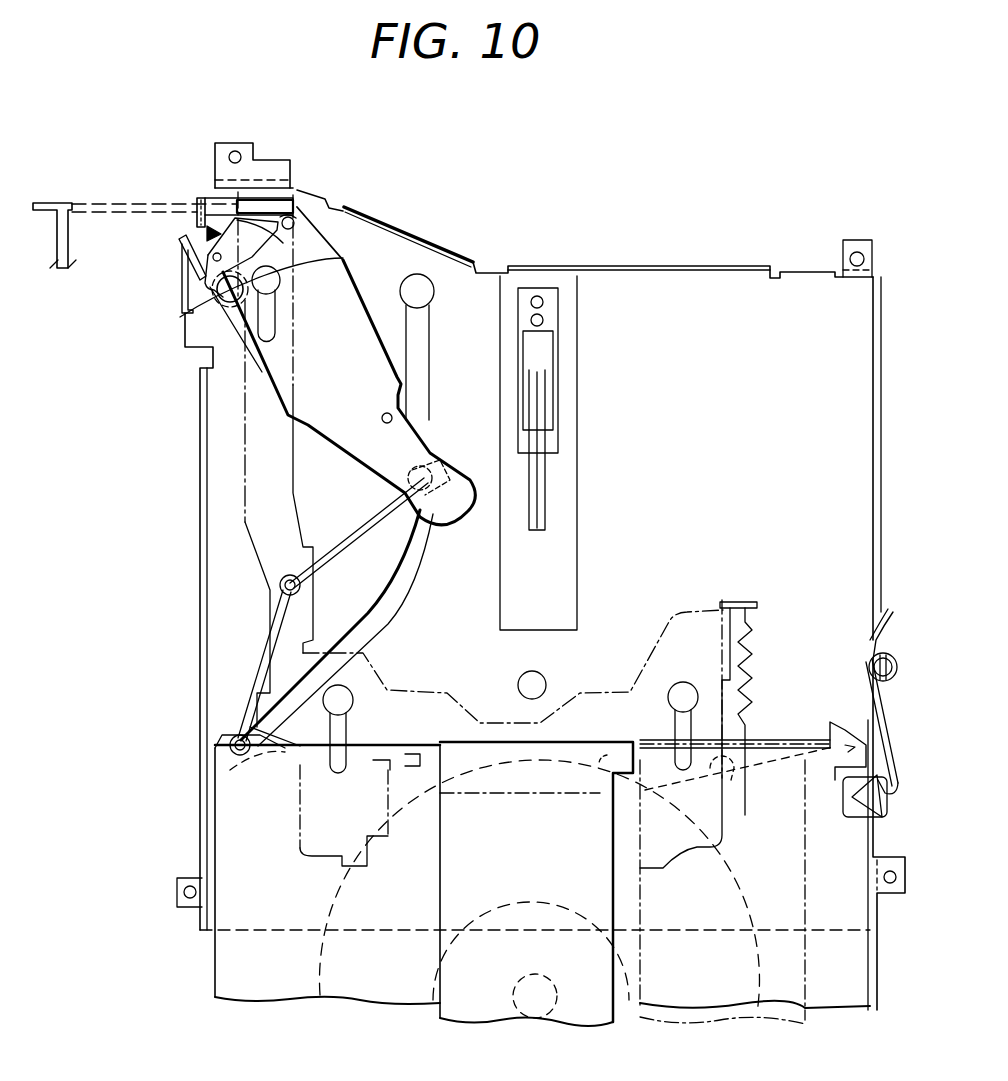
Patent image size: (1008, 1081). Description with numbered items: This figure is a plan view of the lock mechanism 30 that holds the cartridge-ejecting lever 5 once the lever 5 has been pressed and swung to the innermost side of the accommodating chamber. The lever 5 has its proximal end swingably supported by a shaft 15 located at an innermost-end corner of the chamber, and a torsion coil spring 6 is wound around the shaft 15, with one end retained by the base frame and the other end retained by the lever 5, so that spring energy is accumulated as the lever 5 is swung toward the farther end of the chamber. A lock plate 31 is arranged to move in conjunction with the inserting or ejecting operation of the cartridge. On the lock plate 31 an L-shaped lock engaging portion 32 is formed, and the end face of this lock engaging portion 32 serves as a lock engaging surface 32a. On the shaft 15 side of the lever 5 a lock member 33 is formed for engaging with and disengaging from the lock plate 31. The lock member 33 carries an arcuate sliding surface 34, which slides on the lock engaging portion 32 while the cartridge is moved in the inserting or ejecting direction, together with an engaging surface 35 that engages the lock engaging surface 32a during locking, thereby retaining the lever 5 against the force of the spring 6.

The lock mechanism 30 is at (382, 167).
The lock engaging portion 32 is at (45, 203).
The lock engaging surface 32a is at (203, 200).
The lock member 33 is at (207, 233).
The sliding surface 34 is at (296, 198).
The engaging surface 35 is at (343, 258).
The torsion coil spring 6 is at (183, 249).
The shaft 15 is at (180, 317).
The lever 5 is at (310, 378).
The lock plate 31 is at (262, 505).